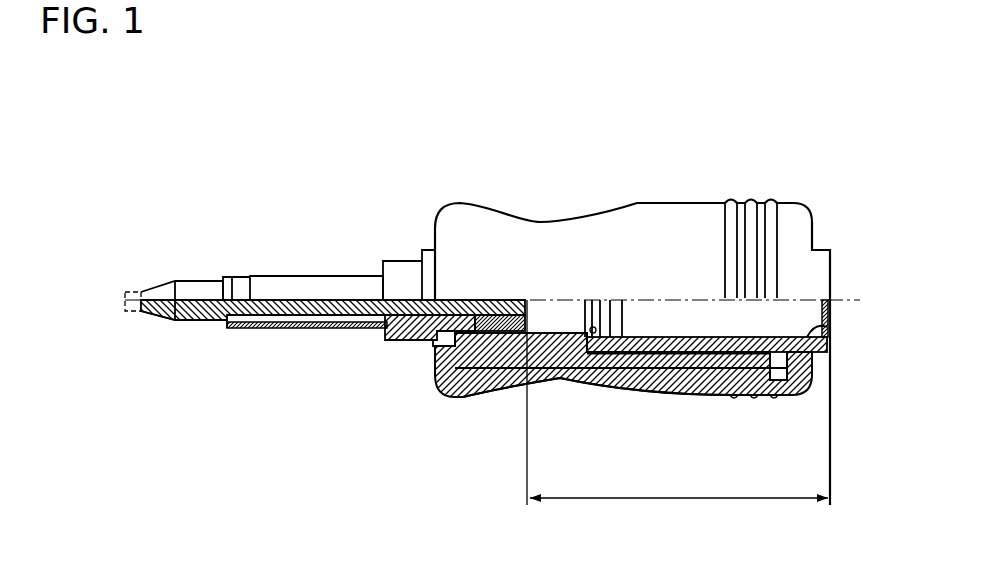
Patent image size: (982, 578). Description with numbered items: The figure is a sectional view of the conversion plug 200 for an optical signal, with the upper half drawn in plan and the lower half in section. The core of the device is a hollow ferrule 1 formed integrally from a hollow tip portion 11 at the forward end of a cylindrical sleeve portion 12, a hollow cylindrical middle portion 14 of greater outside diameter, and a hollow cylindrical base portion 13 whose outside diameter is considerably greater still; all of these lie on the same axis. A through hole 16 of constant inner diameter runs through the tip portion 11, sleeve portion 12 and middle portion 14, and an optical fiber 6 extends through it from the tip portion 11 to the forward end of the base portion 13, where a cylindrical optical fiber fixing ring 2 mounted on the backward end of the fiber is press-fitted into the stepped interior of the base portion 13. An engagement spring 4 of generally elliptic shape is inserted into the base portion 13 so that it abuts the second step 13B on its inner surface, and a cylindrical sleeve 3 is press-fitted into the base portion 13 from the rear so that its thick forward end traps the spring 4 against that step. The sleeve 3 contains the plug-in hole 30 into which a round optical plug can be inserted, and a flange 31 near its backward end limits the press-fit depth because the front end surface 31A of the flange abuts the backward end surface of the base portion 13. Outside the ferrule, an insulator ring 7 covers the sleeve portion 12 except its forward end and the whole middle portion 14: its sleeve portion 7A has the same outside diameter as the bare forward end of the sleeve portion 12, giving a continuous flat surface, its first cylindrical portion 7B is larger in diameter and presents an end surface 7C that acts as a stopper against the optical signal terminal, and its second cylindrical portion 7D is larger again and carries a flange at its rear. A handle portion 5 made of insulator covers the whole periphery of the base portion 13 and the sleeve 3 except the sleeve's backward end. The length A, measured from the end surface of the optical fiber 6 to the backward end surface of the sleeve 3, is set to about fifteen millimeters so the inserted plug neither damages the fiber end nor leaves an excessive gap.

The ferrule 1 is at (230, 335).
The optical fiber fixing ring 2 is at (492, 321).
The sleeve 3 is at (673, 340).
The engagement spring 4 is at (593, 337).
The handle portion 5 is at (793, 218).
The optical fiber 6 is at (277, 297).
The insulator ring 7 is at (372, 350).
The sleeve portion of the insulator ring 7A is at (323, 287).
The first cylindrical portion of the insulator ring 7B is at (398, 265).
The end surface of the first cylindrical portion 7C is at (377, 268).
The second cylindrical portion of the insulator ring 7D is at (427, 252).
The tip portion 11 is at (164, 284).
The sleeve portion 12 is at (237, 280).
The base portion 13 is at (640, 373).
The second step 13B is at (588, 373).
The middle portion 14 is at (418, 332).
The through hole 16 is at (205, 319).
The plug-in hole 30 is at (826, 322).
The flange 31 is at (778, 372).
The front end surface of the flange 31A is at (757, 372).
The conversion plug 200 is at (465, 186).
The length A is at (677, 402).